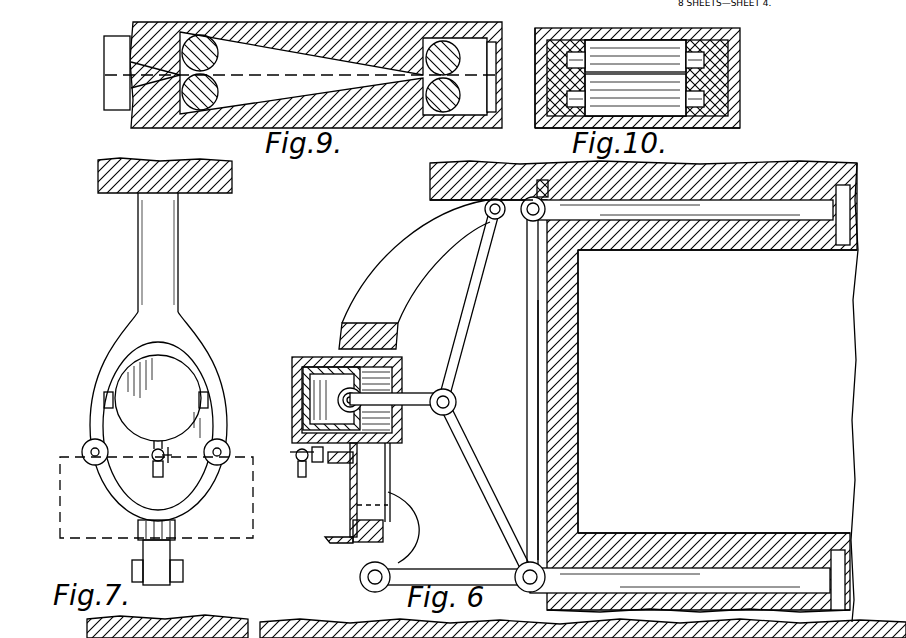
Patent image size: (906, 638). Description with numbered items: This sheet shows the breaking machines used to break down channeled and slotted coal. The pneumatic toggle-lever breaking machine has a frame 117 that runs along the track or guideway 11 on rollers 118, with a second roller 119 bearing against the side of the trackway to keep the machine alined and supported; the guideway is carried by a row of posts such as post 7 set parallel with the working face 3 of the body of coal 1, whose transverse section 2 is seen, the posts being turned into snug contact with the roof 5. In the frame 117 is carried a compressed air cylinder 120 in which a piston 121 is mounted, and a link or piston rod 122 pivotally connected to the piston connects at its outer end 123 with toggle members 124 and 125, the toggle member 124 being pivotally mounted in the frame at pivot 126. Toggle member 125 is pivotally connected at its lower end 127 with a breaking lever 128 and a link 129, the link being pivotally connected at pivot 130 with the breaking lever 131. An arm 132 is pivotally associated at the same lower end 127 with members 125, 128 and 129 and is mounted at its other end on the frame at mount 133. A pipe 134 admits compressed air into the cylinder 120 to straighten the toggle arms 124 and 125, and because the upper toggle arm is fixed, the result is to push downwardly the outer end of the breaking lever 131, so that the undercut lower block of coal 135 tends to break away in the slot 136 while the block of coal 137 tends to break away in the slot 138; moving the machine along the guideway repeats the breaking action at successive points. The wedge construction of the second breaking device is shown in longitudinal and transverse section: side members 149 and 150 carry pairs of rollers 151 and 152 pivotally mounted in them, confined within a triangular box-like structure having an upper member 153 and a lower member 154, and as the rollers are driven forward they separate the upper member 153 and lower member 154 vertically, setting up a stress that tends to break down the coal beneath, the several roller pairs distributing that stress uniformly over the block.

In FIG. 6, the body of coal 1 is at (797, 169).
In FIG. 6, the transverse section 2 is at (717, 343).
In FIG. 6, the working face 3 is at (550, 352).
In FIG. 6, the roof 5 is at (440, 198).
In FIG. 6, the post 7 is at (517, 623).
In FIG. 7, the track or guideway 11 is at (213, 542).
In FIG. 6, the track or guideway 11 is at (348, 507).
In FIG. 7, the frame 117 is at (222, 276).
In FIG. 6, the frame 117 is at (381, 263).
In FIG. 7, the rollers 118 is at (88, 448).
In FIG. 6, the rollers 118 is at (332, 463).
In FIG. 7, the second roller 119 is at (234, 533).
In FIG. 6, the second roller 119 is at (357, 541).
In FIG. 7, the compressed air cylinder 120 is at (170, 418).
In FIG. 6, the compressed air cylinder 120 is at (305, 353).
In FIG. 6, the piston 121 is at (340, 330).
In FIG. 6, the link or piston rod 122 is at (445, 440).
In FIG. 6, the outer end of piston rod 123 is at (507, 400).
In FIG. 6, the toggle member 124 is at (456, 334).
In FIG. 6, the toggle member 125 is at (522, 458).
In FIG. 6, the pivot 126 is at (485, 207).
In FIG. 6, the lower end pivot 127 is at (516, 571).
In FIG. 6, the breaking lever 128 is at (699, 590).
In FIG. 6, the link 129 is at (527, 412).
In FIG. 6, the pivot 130 is at (531, 222).
In FIG. 6, the breaking lever 131 is at (697, 220).
In FIG. 7, the arm 132 is at (131, 567).
In FIG. 6, the arm 132 is at (454, 561).
In FIG. 7, the mount 133 is at (212, 606).
In FIG. 6, the mount 133 is at (361, 584).
In FIG. 7, the pipe 134 is at (170, 503).
In FIG. 6, the pipe 134 is at (301, 468).
In FIG. 6, the lower block of coal 135 is at (712, 611).
In FIG. 6, the slot 136 is at (825, 528).
In FIG. 6, the block of coal 137 is at (700, 378).
In FIG. 6, the slot 138 is at (827, 290).
In FIG. 10, the side member 149 is at (706, 93).
In FIG. 9, the side member 150 is at (104, 106).
In FIG. 10, the side member 150 is at (541, 128).
In FIG. 10, the rollers 151 is at (790, 58).
In FIG. 10, the rollers 152 is at (720, 108).
In FIG. 9, the upper member 153 is at (132, 24).
In FIG. 10, the upper member 153 is at (794, 75).
In FIG. 9, the lower member 154 is at (137, 122).
In FIG. 10, the lower member 154 is at (745, 155).